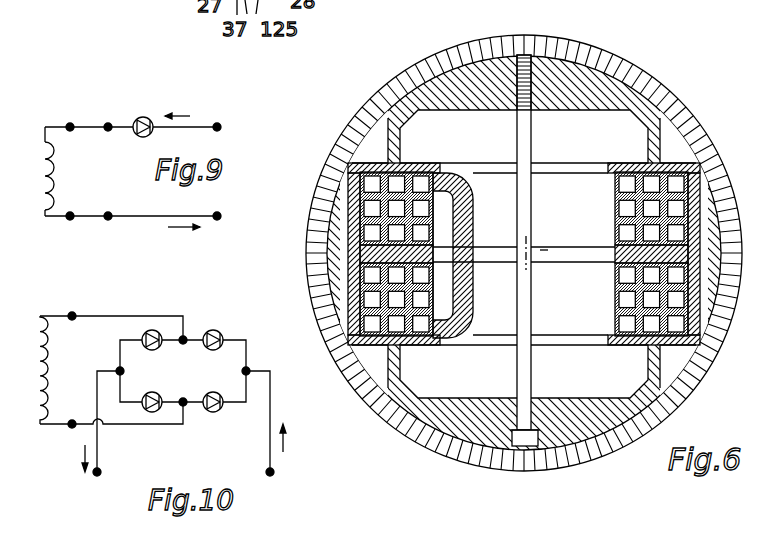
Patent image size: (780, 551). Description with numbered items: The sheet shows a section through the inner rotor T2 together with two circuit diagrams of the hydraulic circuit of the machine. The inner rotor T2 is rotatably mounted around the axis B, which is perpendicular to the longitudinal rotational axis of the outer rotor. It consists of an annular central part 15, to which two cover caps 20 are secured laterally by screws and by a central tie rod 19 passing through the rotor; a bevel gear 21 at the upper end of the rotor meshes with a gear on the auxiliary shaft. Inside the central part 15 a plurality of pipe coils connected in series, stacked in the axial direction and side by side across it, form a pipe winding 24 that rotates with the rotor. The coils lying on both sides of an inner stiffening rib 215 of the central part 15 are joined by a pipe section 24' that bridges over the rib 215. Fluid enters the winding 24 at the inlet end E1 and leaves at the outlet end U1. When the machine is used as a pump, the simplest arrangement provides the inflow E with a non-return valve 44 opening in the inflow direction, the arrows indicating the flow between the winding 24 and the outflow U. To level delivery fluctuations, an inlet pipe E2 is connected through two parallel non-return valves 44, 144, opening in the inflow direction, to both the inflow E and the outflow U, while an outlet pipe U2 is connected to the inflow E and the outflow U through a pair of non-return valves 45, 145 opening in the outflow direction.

In FIG. 6, the cover cap 20 is at (469, 82).
In FIG. 6, the bevel gear 21 is at (672, 112).
In FIG. 6, the inner rotor T2 is at (628, 82).
In FIG. 6, the central tie rod 19 is at (531, 147).
In FIG. 6, the pipe winding 24 is at (528, 254).
In FIG. 9, the pipe winding 24 is at (73, 176).
In FIG. 10, the pipe winding 24 is at (68, 370).
In FIG. 6, the pipe section 24' is at (473, 255).
In FIG. 6, the annular central part 15 is at (697, 215).
In FIG. 6, the inner stiffening rib 215 is at (392, 252).
In FIG. 6, the axis B is at (529, 250).
In FIG. 9, the inlet end E1 is at (70, 127).
In FIG. 10, the inlet end E1 is at (72, 316).
In FIG. 9, the inflow E is at (108, 127).
In FIG. 10, the inflow E is at (183, 340).
In FIG. 10, the inlet pipe E2 is at (272, 398).
In FIG. 9, the outflow U is at (108, 216).
In FIG. 10, the outflow U is at (183, 402).
In FIG. 9, the outlet end U1 is at (70, 216).
In FIG. 10, the outlet end U1 is at (72, 424).
In FIG. 10, the outlet pipe U2 is at (100, 455).
In FIG. 9, the non-return valve 44 is at (148, 120).
In FIG. 10, the non-return valve 44 is at (218, 335).
In FIG. 10, the non-return valve 45 is at (147, 352).
In FIG. 10, the non-return valve 144 is at (216, 412).
In FIG. 10, the non-return valve 145 is at (152, 395).